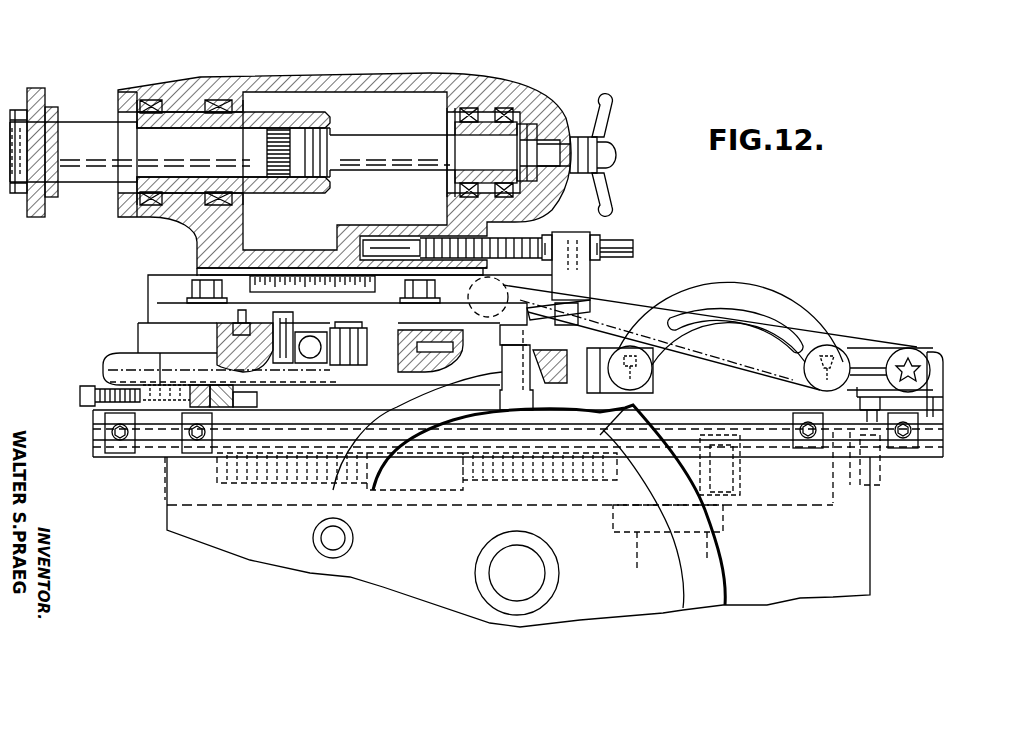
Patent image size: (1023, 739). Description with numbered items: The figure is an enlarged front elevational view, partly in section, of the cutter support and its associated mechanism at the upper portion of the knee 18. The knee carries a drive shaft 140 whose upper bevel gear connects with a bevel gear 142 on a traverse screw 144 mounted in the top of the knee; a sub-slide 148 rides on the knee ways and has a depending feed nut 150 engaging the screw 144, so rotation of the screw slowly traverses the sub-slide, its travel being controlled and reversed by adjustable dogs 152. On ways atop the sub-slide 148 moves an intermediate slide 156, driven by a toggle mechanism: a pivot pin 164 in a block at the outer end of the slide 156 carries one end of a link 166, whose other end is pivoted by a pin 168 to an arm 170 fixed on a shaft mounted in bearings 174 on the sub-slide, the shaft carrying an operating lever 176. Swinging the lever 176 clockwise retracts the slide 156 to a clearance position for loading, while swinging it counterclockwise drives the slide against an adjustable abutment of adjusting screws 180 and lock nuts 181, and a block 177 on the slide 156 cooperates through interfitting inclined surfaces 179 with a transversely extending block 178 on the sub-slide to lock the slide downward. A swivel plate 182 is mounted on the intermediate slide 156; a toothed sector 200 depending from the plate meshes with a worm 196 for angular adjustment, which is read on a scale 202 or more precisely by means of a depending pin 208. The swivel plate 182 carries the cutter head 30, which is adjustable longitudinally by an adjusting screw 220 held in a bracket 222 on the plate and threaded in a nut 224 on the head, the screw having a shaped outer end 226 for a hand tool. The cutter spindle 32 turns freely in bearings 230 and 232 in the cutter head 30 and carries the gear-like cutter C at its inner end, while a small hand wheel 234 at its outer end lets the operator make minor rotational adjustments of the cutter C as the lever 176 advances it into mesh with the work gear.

The gear-like cutter C is at (42, 88).
The knee 18 is at (867, 572).
The cutter head 30 is at (435, 74).
The cutter spindle 32 is at (403, 128).
The drive shaft 140 is at (710, 562).
The bevel gear 142 is at (698, 420).
The traverse screw 144 is at (502, 481).
The sub-slide 148 is at (93, 438).
The feed nut 150 is at (443, 490).
The adjustable dogs 152 is at (120, 458).
The intermediate slide 156 is at (138, 335).
The pivot pin 164 is at (641, 343).
The link 166 is at (752, 298).
The pin 168 is at (812, 379).
The arm 170 is at (865, 347).
The bearings 174 is at (943, 386).
The operating lever 176 is at (603, 306).
The block 177 is at (267, 397).
The transversely extending block 178 is at (190, 385).
The interfitting inclined surfaces 179 is at (208, 385).
The adjusting screws 180 is at (80, 396).
The lock nuts 181 is at (93, 383).
The swivel plate 182 is at (147, 285).
The worm 196 is at (352, 332).
The toothed sector 200 is at (295, 324).
The scale 202 is at (281, 276).
The depending pin 208 is at (579, 315).
The adjusting screw 220 is at (571, 255).
The bracket 222 is at (594, 240).
The nut 224 is at (470, 252).
The shaped outer end of screw 226 is at (633, 243).
The bearing 230 is at (220, 112).
The bearing 232 is at (478, 108).
The hand wheel 234 is at (593, 112).